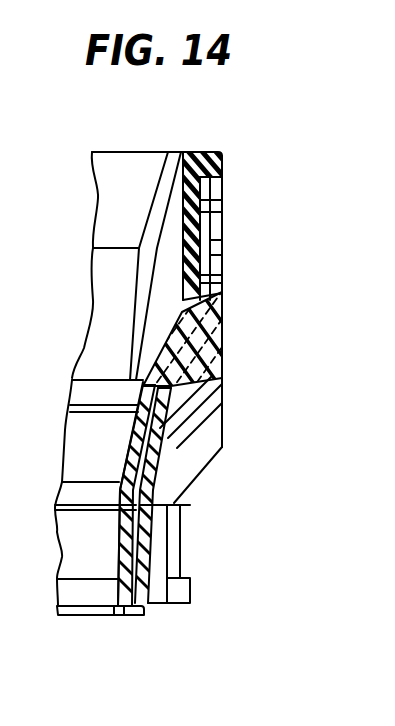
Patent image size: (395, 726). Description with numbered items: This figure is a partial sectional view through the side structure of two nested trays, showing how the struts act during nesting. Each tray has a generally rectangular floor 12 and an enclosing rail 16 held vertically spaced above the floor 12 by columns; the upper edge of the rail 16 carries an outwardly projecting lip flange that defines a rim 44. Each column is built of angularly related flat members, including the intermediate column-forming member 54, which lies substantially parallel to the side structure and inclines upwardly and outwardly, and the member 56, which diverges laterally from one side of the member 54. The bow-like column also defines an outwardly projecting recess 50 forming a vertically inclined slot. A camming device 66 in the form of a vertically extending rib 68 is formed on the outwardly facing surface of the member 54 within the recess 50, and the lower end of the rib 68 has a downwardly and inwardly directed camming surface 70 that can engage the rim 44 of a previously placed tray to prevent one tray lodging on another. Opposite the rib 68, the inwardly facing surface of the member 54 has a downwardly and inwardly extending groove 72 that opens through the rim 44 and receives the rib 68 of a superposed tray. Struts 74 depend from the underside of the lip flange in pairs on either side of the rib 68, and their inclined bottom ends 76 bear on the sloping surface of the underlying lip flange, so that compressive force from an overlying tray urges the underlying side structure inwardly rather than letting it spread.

The rim 44 is at (138, 150).
The floor 12 is at (78, 513).
The rail 16 is at (200, 193).
The struts 74 is at (212, 210).
The bottom ends of struts 76 is at (216, 268).
The groove 72 is at (225, 368).
The rib 68 is at (224, 447).
The camming surface 70 is at (225, 397).
The camming device 66 is at (224, 325).
The intermediate column-forming member 54 is at (160, 472).
The column-forming member 56 is at (183, 538).
The recess 50 is at (153, 605).